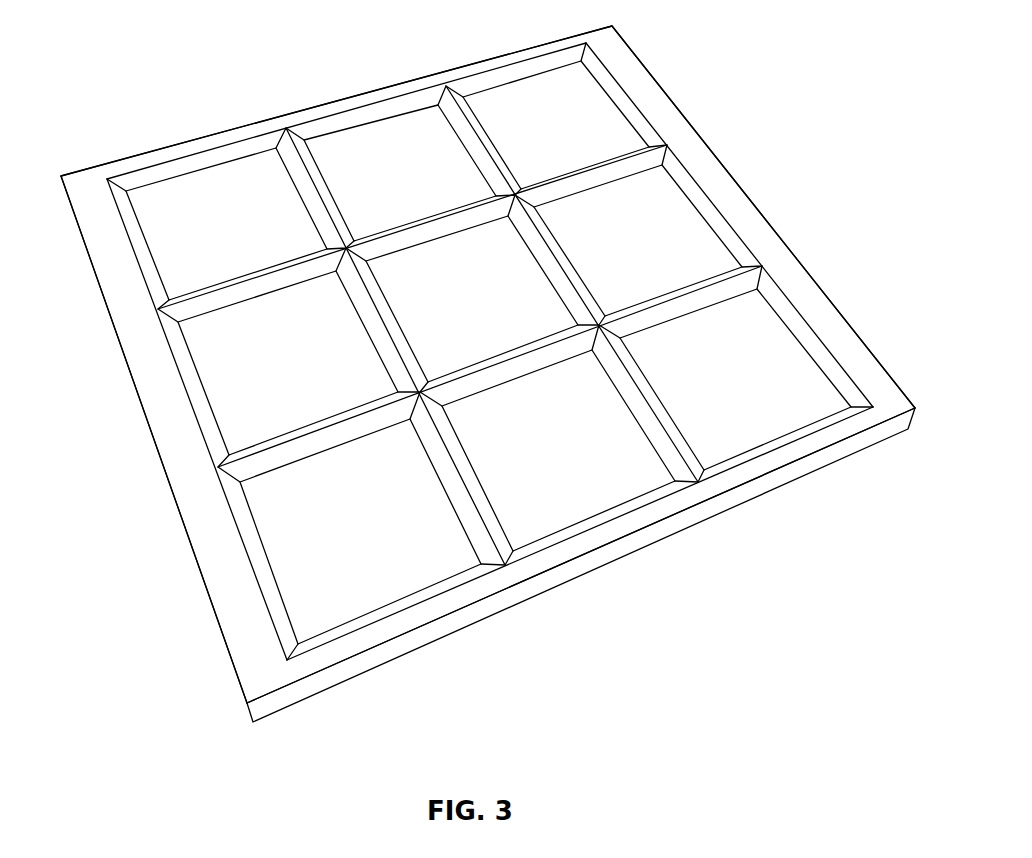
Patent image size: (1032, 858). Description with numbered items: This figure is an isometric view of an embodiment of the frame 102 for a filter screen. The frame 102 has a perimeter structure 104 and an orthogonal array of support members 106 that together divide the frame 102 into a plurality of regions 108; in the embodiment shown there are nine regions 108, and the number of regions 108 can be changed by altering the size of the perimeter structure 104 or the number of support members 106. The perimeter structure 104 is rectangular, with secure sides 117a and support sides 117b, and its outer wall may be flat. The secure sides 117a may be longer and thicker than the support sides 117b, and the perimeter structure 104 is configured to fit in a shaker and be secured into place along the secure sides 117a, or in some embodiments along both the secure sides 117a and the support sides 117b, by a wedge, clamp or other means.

The frame 102 is at (175, 65).
The perimeter structure 104 is at (76, 172).
The support members 106 is at (329, 193).
The regions 108 is at (211, 233).
The secure sides 117a is at (716, 149).
The support sides 117b is at (324, 103).